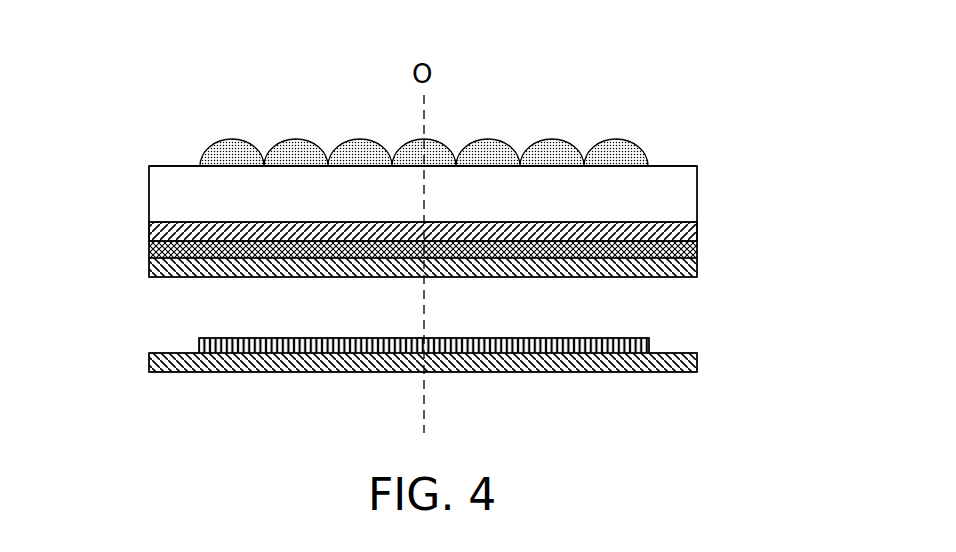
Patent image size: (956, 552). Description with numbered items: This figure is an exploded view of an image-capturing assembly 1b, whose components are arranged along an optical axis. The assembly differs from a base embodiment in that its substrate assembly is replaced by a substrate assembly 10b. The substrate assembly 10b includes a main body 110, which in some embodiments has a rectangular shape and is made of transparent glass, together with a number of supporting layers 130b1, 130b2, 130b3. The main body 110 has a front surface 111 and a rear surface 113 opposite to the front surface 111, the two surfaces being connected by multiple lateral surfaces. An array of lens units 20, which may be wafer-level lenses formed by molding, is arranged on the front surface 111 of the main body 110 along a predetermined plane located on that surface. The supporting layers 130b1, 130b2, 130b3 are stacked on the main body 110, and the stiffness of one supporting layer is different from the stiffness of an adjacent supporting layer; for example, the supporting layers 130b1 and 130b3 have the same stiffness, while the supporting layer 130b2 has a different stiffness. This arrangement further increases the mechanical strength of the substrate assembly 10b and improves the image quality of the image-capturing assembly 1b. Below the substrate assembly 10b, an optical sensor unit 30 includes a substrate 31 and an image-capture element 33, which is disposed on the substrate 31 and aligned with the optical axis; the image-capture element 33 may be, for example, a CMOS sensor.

The image-capturing assembly 1b is at (690, 98).
The substrate assembly 10b is at (707, 160).
The main body 110 is at (688, 196).
The front surface 111 is at (165, 165).
The rear surface 113 is at (208, 237).
The supporting layer 130b1 is at (697, 232).
The supporting layer 130b2 is at (697, 250).
The supporting layer 130b3 is at (697, 268).
The lens units 20 is at (615, 140).
The optical sensor unit 30 is at (703, 352).
The substrate 31 is at (320, 360).
The image-capture element 33 is at (258, 350).